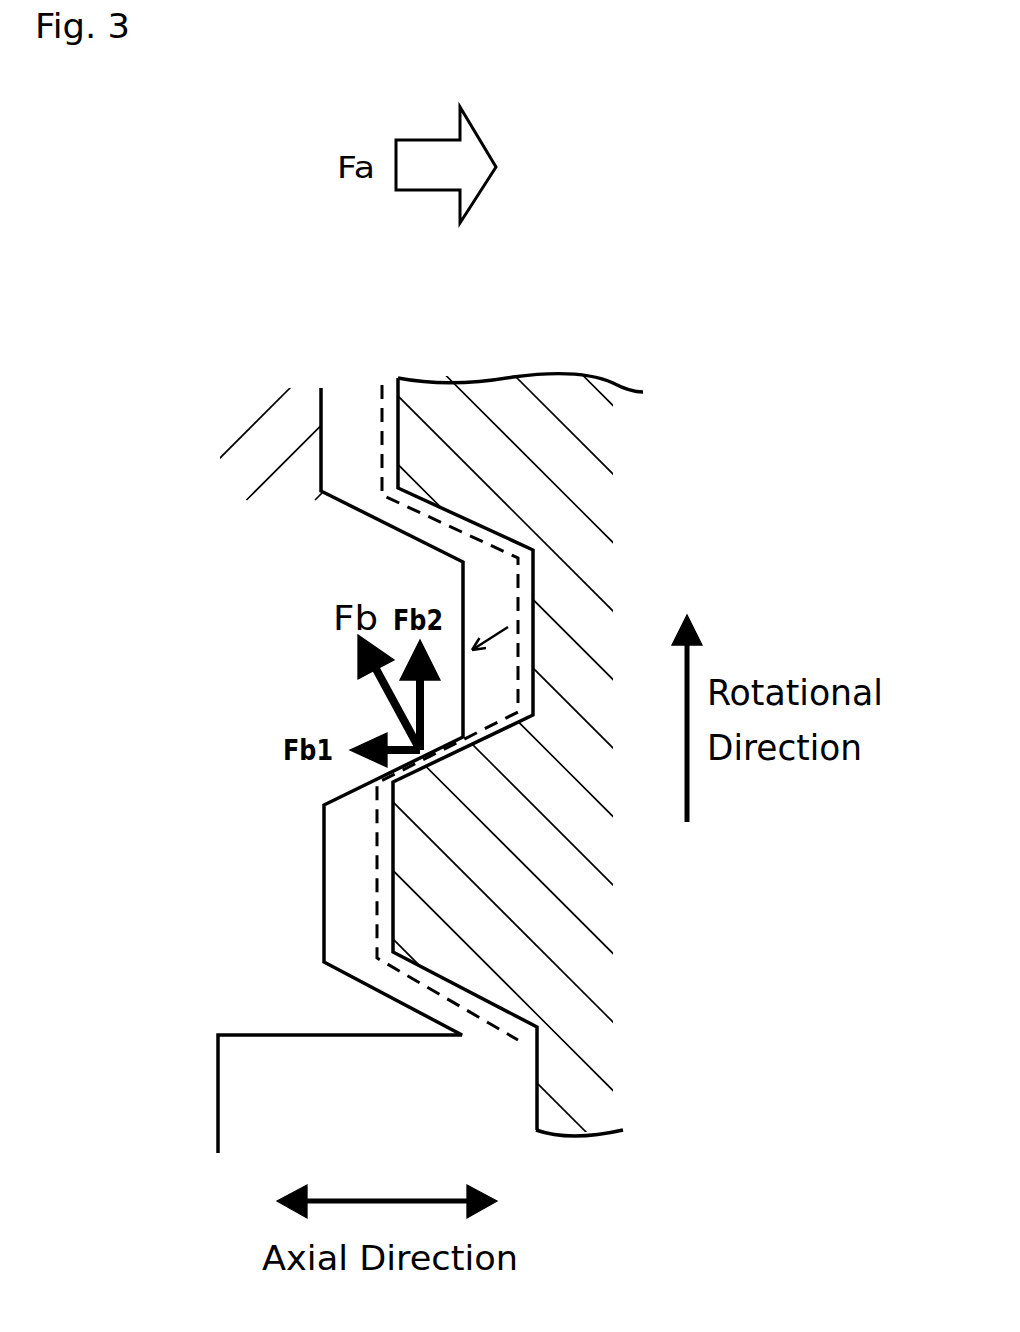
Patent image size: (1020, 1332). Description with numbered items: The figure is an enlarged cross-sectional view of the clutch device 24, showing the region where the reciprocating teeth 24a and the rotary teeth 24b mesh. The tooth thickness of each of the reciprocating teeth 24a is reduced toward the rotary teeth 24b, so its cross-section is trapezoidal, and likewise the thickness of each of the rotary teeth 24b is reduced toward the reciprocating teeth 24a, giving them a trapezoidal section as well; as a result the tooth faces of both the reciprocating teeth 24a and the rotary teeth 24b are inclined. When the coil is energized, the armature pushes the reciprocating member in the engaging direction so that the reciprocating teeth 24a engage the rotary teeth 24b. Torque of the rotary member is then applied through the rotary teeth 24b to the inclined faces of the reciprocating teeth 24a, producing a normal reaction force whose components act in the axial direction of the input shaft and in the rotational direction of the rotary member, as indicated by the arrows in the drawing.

The clutch device 24 is at (720, 297).
The reciprocating teeth 24a is at (285, 437).
The rotary teeth 24b is at (548, 437).